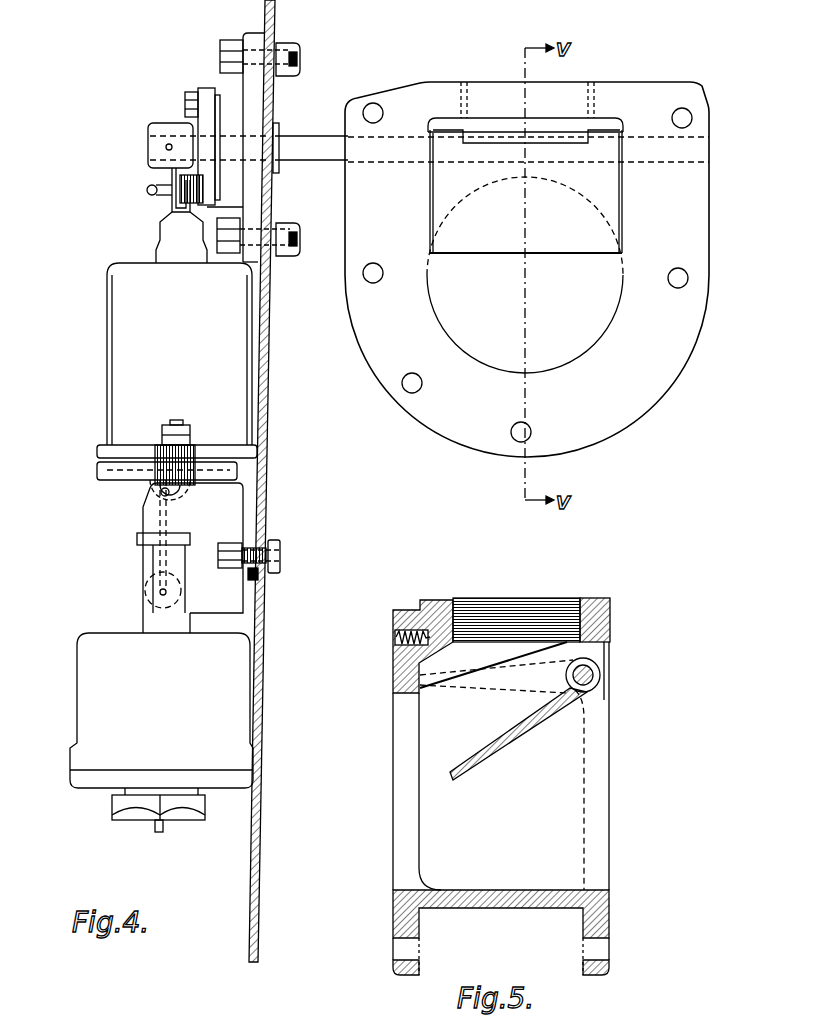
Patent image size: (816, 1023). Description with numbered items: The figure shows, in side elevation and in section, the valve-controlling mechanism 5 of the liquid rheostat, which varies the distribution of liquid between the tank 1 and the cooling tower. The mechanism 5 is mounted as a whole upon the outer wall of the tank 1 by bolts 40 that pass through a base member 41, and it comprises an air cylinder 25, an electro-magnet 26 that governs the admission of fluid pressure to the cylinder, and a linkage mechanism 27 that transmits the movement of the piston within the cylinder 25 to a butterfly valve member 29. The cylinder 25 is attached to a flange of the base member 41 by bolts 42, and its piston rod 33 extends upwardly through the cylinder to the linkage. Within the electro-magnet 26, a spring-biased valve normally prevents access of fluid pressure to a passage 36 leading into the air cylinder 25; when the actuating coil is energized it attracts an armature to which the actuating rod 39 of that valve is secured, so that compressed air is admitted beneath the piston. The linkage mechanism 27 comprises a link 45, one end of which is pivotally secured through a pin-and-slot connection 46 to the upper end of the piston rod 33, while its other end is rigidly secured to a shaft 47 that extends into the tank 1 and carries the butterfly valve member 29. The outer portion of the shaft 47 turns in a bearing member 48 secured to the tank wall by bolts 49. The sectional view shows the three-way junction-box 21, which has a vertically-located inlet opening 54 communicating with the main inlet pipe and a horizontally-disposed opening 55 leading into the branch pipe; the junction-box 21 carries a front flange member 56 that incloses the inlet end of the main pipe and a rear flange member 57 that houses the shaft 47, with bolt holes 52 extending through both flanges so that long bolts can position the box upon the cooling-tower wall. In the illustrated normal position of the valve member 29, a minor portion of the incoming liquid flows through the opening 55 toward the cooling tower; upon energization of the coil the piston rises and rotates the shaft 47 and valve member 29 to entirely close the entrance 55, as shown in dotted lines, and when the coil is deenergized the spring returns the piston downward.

In FIG. 4, the tank 1 is at (282, 27).
In FIG. 4, the valve-controlling mechanism 5 is at (85, 435).
In FIG. 4, the junction-box 21 is at (360, 353).
In FIG. 5, the junction-box 21 is at (393, 673).
In FIG. 4, the air cylinder 25 is at (118, 353).
In FIG. 4, the electro-magnet 26 is at (80, 705).
In FIG. 4, the linkage mechanism 27 is at (147, 143).
In FIG. 4, the valve member 29 is at (494, 240).
In FIG. 5, the valve member 29 is at (500, 689).
In FIG. 4, the piston rod 33 is at (170, 247).
In FIG. 4, the passage 36 is at (160, 521).
In FIG. 4, the actuating rod 39 is at (157, 832).
In FIG. 4, the bolts 40 is at (230, 566).
In FIG. 4, the base member 41 is at (248, 508).
In FIG. 4, the bolts 42 is at (165, 478).
In FIG. 4, the link 45 is at (153, 165).
In FIG. 4, the pin-and-slot connection 46 is at (162, 193).
In FIG. 4, the shaft 47 is at (313, 145).
In FIG. 5, the shaft 47 is at (603, 674).
In FIG. 4, the bearing member 48 is at (232, 92).
In FIG. 4, the bolts 49 is at (226, 52).
In FIG. 4, the holes 52 is at (404, 388).
In FIG. 5, the holes 52 is at (397, 951).
In FIG. 4, the inlet opening 54 is at (600, 337).
In FIG. 5, the inlet opening 54 is at (397, 802).
In FIG. 4, the opening 55 is at (470, 102).
In FIG. 5, the opening 55 is at (462, 615).
In FIG. 5, the front flange member 56 is at (393, 915).
In FIG. 4, the rear flange member 57 is at (454, 422).
In FIG. 5, the rear flange member 57 is at (610, 917).